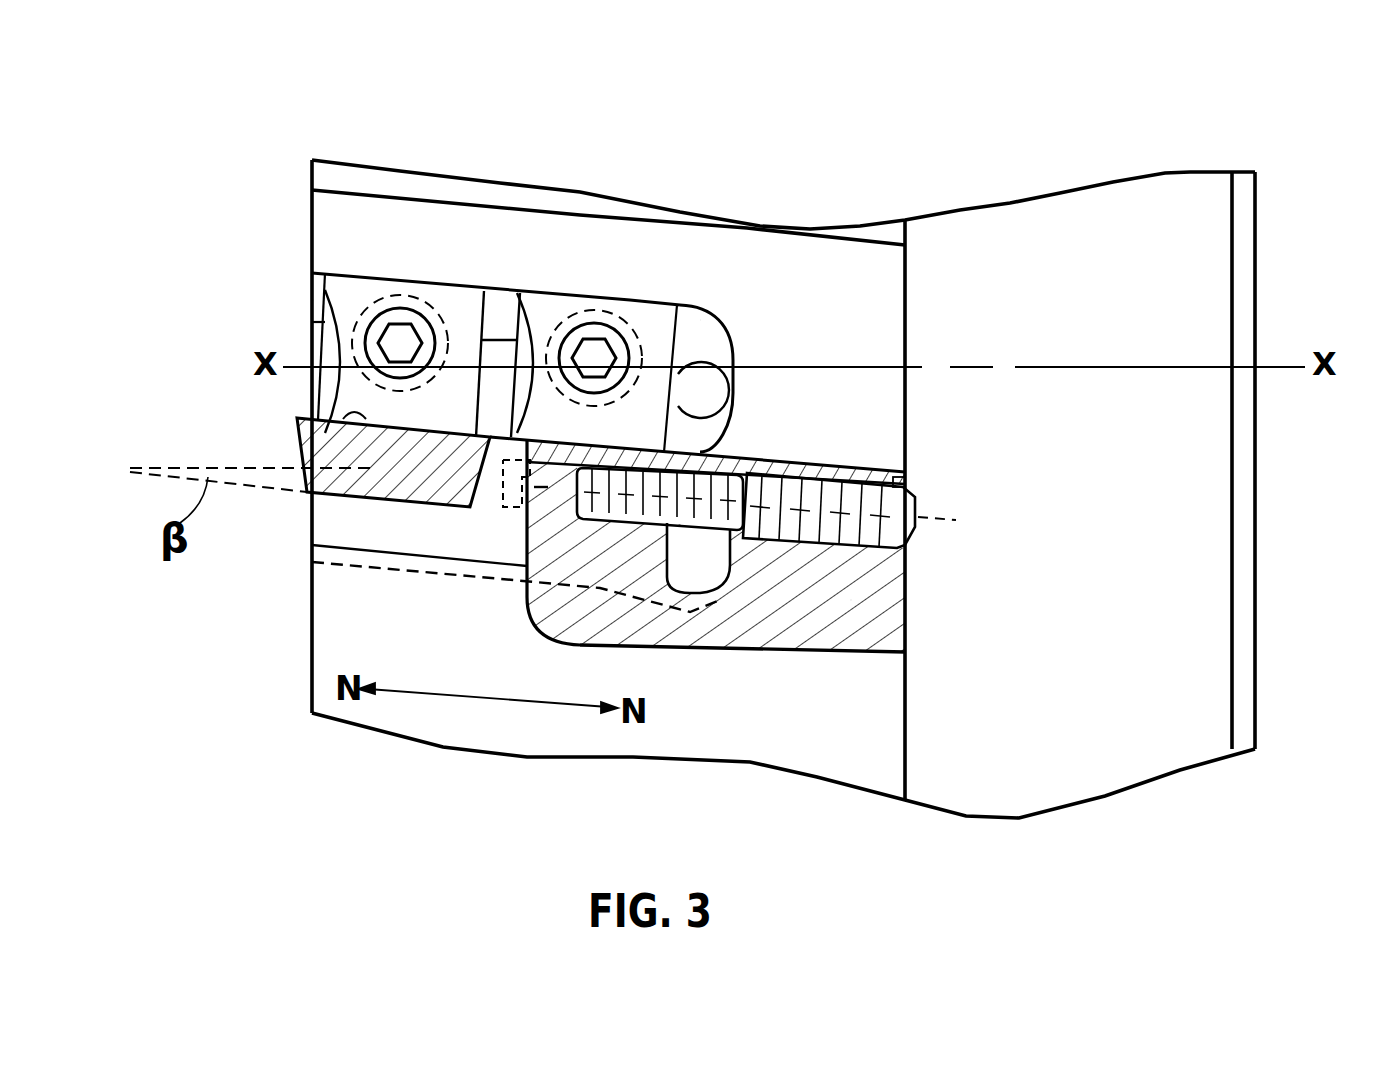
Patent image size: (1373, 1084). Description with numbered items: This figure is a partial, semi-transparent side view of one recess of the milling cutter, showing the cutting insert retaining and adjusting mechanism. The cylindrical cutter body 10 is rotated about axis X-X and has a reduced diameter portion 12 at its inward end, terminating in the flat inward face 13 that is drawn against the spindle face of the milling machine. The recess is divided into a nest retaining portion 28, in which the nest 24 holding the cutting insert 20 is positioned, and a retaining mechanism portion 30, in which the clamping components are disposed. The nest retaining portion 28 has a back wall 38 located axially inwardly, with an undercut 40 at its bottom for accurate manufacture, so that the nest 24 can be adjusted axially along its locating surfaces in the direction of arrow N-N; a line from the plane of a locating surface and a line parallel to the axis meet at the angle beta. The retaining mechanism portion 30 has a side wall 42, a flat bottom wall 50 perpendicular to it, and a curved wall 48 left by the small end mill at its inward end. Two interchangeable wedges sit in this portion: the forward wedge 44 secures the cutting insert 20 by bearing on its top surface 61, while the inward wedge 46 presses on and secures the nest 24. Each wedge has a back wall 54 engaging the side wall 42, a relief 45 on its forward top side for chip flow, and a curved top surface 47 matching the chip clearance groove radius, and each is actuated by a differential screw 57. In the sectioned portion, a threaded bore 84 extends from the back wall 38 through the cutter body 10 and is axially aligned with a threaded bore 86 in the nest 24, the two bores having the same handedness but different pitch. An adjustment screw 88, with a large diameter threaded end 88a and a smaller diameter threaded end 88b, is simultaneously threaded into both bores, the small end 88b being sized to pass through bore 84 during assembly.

The cutter body 10 is at (833, 767).
The reduced diameter portion 12 is at (1113, 197).
The inward face 13 is at (1270, 592).
The cutting insert 20 is at (347, 477).
The nest 24 is at (320, 525).
The nest retaining portion 28 is at (135, 391).
The retaining mechanism portion 30 is at (268, 304).
The back wall 38 is at (703, 393).
The undercut 40 is at (713, 590).
The side wall 42 is at (502, 310).
The wedge 44 is at (375, 287).
The relief 45 is at (520, 353).
The wedge 46 is at (652, 315).
The top surface 47 is at (350, 297).
The curved wall 48 is at (710, 417).
The bottom wall 50 is at (707, 387).
The back wall 54 is at (460, 283).
The differential screw 57 is at (405, 343).
The top surface 61 is at (307, 438).
The threaded bore 84 is at (847, 553).
The threaded bore 86 is at (513, 497).
The adjustment screw 88 is at (750, 552).
The large diameter threaded end 88a is at (883, 492).
The smaller diameter threaded end 88b is at (613, 507).